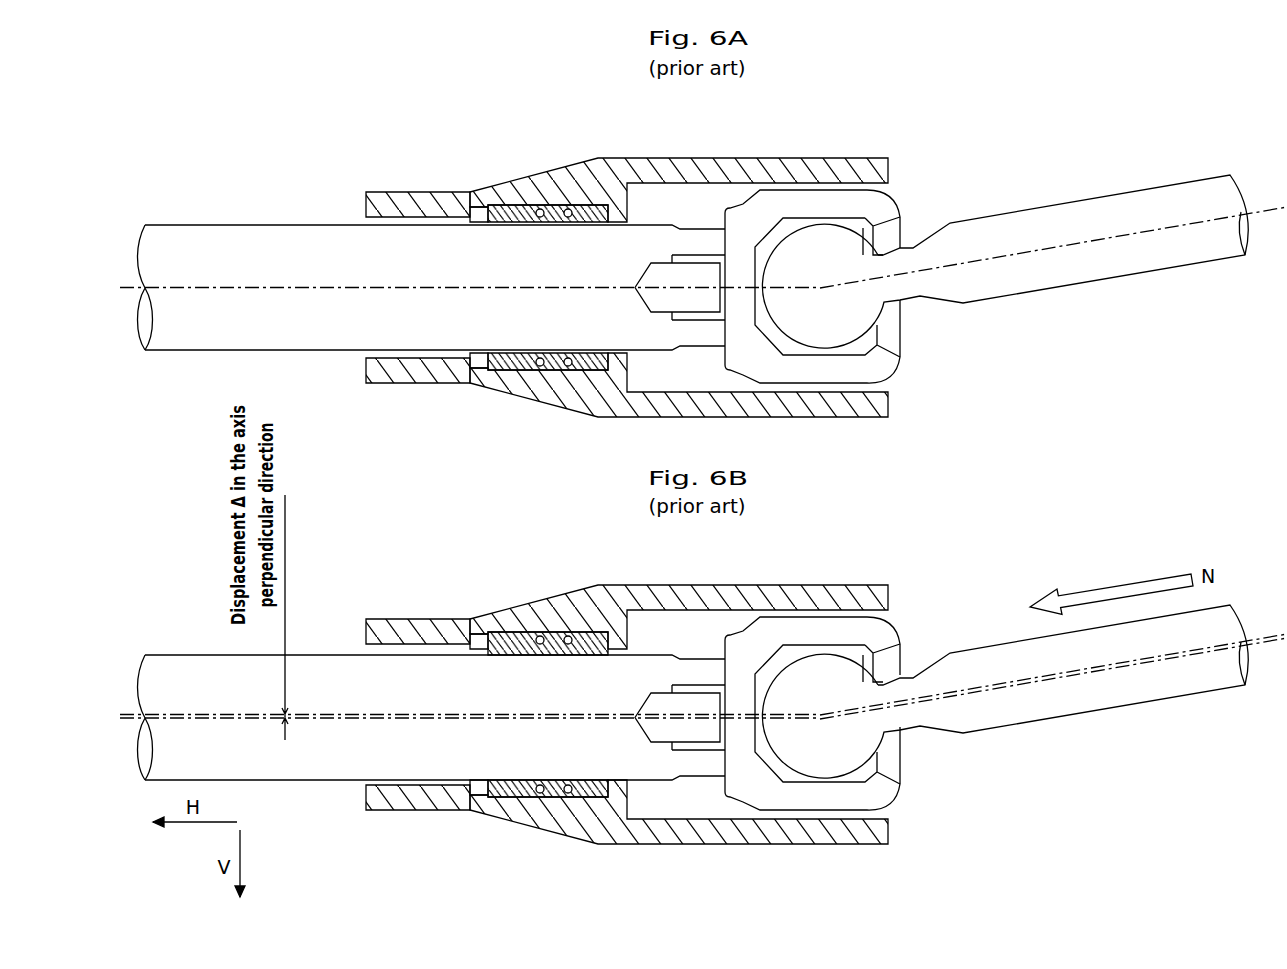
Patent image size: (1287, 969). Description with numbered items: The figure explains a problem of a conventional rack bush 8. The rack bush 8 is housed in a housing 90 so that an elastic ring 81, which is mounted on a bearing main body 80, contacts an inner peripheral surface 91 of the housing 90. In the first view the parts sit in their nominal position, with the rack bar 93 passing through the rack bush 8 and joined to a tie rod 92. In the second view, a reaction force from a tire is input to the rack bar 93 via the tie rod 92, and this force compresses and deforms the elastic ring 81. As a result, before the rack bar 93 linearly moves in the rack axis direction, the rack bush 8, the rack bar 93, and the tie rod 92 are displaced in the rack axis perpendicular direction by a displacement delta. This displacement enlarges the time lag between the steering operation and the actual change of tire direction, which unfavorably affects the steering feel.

In FIG. 6A, the rack bush 8 is at (503, 190).
In FIG. 6B, the rack bush 8 is at (503, 617).
In FIG. 6A, the bearing main body 80 is at (633, 285).
In FIG. 6B, the bearing main body 80 is at (633, 714).
In FIG. 6A, the elastic ring 81 is at (542, 207).
In FIG. 6B, the elastic ring 81 is at (542, 634).
In FIG. 6A, the housing 90 is at (378, 192).
In FIG. 6B, the housing 90 is at (378, 618).
In FIG. 6A, the inner peripheral surface 91 is at (630, 205).
In FIG. 6B, the inner peripheral surface 91 is at (630, 632).
In FIG. 6A, the tie rod 92 is at (1083, 198).
In FIG. 6B, the tie rod 92 is at (965, 650).
In FIG. 6A, the rack bar 93 is at (243, 225).
In FIG. 6B, the rack bar 93 is at (180, 655).